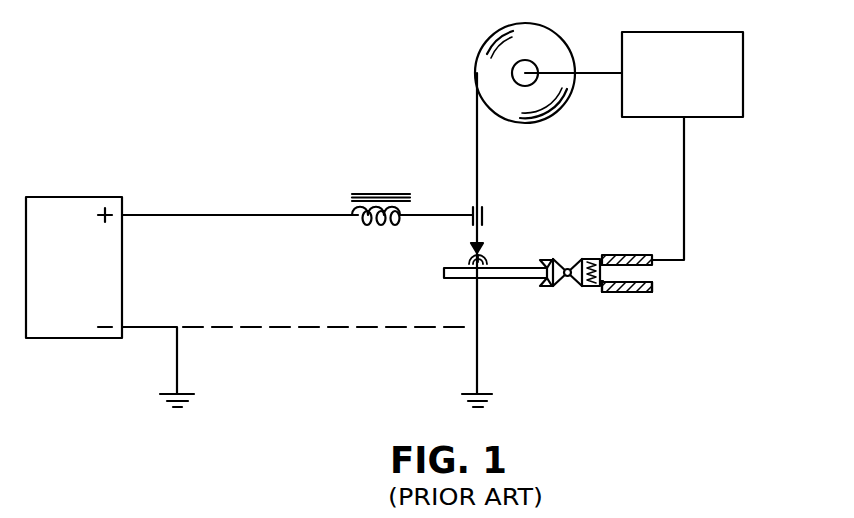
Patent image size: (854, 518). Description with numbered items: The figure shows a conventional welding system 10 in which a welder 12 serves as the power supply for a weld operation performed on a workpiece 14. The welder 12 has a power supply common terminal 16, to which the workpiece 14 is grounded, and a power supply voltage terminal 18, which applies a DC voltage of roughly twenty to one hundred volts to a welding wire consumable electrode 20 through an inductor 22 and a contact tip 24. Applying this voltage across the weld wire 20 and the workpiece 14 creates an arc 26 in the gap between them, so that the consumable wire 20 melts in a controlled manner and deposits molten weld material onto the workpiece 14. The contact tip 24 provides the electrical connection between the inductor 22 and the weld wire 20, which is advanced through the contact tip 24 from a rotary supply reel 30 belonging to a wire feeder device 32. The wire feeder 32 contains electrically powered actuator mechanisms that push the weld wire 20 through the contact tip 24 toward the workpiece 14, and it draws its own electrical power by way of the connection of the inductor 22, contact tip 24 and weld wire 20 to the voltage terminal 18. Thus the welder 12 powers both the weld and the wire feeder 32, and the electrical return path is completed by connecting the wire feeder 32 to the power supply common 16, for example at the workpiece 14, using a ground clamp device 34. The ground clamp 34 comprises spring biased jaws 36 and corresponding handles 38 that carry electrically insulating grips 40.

The welding system 10 is at (175, 73).
The welder 12 is at (67, 196).
The workpiece 14 is at (509, 270).
The power supply common terminal 16 is at (122, 325).
The power supply voltage terminal 18 is at (122, 211).
The welding wire consumable electrode 20 is at (475, 148).
The inductor 22 is at (370, 192).
The contact tip 24 is at (483, 213).
The arc 26 is at (467, 258).
The rotary supply reel 30 is at (482, 45).
The wire feeder device 32 is at (745, 67).
The ground clamp device 34 is at (587, 305).
The spring biased jaws 36 is at (545, 285).
The handles 38 is at (641, 303).
The electrically insulating grips 40 is at (628, 292).